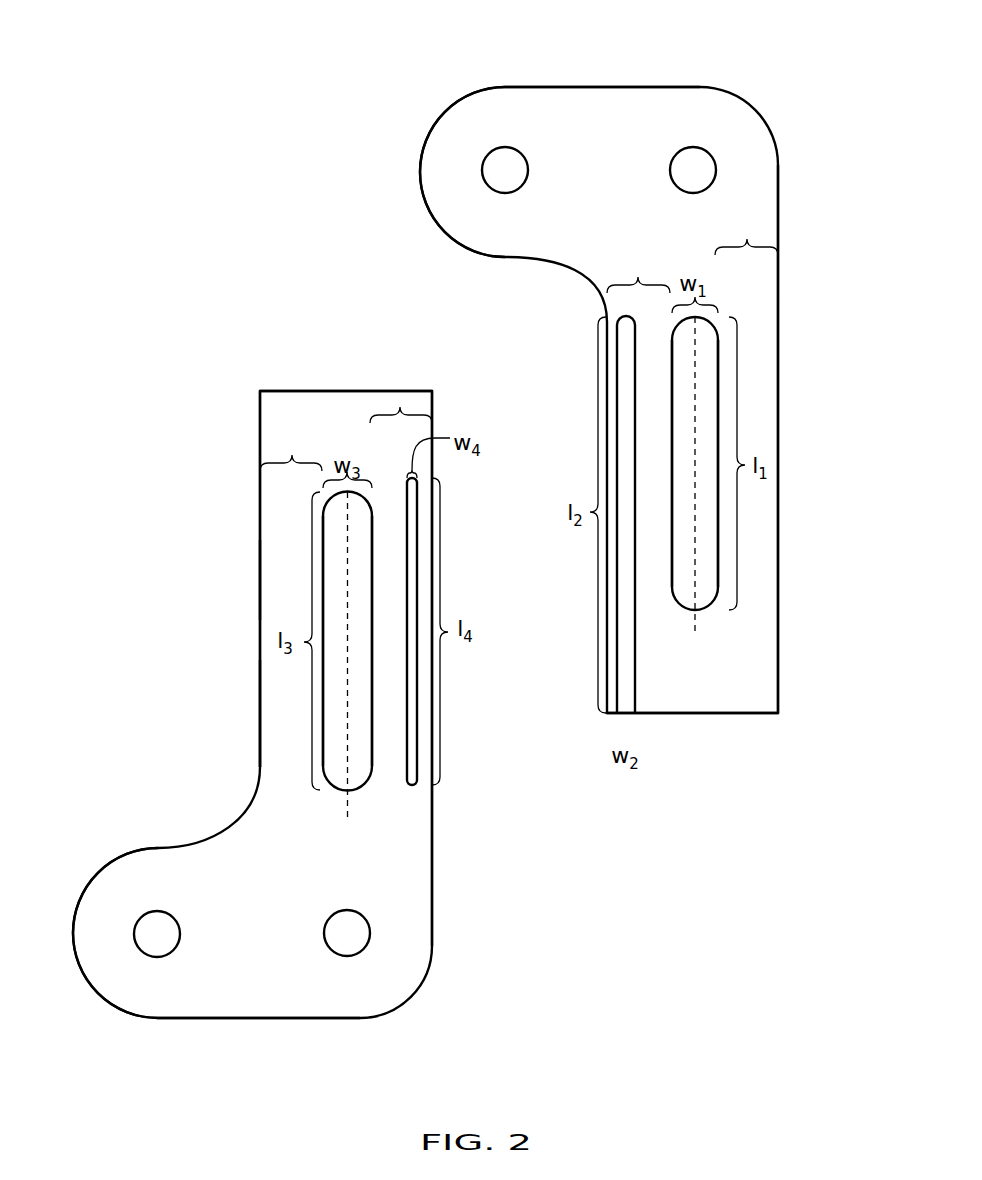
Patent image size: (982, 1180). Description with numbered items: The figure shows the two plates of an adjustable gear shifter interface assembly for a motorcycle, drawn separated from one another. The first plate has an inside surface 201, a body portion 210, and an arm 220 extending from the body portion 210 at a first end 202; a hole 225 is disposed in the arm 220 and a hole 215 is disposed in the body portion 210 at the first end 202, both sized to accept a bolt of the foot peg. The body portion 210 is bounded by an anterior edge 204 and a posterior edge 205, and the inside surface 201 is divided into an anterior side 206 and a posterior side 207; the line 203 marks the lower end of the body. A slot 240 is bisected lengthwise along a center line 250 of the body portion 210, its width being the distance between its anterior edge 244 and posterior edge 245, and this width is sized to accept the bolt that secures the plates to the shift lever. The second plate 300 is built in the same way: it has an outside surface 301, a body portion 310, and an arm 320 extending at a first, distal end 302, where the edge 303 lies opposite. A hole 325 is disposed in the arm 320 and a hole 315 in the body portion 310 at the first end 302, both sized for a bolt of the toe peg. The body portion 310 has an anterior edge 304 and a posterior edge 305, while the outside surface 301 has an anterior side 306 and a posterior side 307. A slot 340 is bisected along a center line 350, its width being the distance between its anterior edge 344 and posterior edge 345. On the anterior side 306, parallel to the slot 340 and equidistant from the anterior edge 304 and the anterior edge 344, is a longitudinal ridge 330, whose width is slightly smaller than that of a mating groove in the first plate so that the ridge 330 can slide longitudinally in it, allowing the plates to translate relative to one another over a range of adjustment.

The inside surface 201 is at (765, 573).
The first end 202 is at (660, 87).
The bottom edge of first plate 203 is at (735, 713).
The anterior edge 204 is at (610, 595).
The posterior edge 205 is at (773, 383).
The anterior side 206 is at (638, 278).
The posterior side 207 is at (747, 240).
The body portion 210 is at (765, 308).
The hole 215 is at (717, 160).
The arm 220 is at (492, 110).
The hole 225 is at (520, 150).
The slot 240 is at (710, 607).
The anterior edge 244 is at (672, 540).
The posterior edge 245 is at (718, 565).
The center line 250 is at (695, 486).
The second plate 300 is at (396, 874).
The outside surface 301 is at (275, 498).
The first end 302 is at (272, 1018).
The top edge of second plate 303 is at (310, 398).
The anterior edge 304 is at (427, 463).
The posterior edge 305 is at (277, 578).
The anterior side 306 is at (400, 408).
The posterior side 307 is at (292, 456).
The body portion 310 is at (278, 692).
The hole 315 is at (347, 957).
The arm 320 is at (125, 982).
The hole 325 is at (137, 917).
The ridge 330 is at (412, 785).
The slot 340 is at (335, 787).
The anterior edge 344 is at (375, 755).
The posterior edge 345 is at (322, 572).
The center line 350 is at (348, 669).